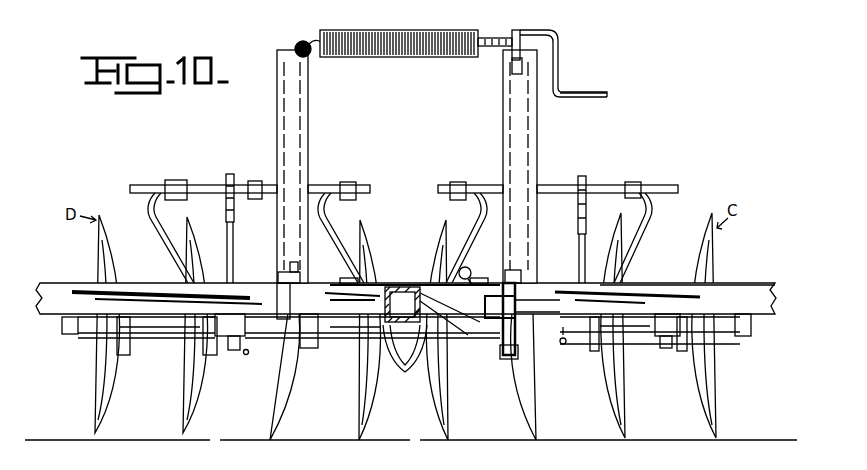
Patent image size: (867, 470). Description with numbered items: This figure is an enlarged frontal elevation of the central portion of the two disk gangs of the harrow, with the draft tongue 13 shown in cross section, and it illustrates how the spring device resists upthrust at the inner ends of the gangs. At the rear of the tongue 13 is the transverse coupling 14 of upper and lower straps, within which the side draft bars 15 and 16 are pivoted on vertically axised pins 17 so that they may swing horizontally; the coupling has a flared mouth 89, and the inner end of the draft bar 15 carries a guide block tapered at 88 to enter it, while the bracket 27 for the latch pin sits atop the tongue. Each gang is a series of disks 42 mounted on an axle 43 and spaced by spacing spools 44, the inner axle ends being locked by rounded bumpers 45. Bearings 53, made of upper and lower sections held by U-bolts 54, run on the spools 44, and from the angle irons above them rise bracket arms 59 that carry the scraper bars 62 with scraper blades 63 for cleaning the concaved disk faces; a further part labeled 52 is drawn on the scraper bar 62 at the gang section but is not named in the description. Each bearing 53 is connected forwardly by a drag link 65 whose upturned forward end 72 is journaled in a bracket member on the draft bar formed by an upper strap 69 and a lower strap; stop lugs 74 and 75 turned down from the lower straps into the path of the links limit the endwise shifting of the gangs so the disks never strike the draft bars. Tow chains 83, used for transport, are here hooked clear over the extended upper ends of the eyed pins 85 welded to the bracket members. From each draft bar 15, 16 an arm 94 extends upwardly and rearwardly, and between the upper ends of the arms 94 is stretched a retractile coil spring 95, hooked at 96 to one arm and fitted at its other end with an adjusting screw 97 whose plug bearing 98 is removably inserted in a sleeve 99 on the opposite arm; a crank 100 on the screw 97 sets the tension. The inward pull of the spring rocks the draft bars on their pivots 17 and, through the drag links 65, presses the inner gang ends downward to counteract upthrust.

The tongue 13 is at (408, 286).
The coupling 14 is at (383, 284).
The side draft bar 15 is at (735, 283).
The side draft bar 16 is at (72, 283).
The pivot pin 17 is at (346, 281).
The bracket 27 is at (470, 336).
The disk 42 is at (150, 405).
The axle 43 is at (64, 333).
The spacing spool 44 is at (140, 339).
The bumper 45 is at (405, 358).
The clamp 52 is at (224, 215).
The bearing 53 is at (258, 352).
The U-bolt 54 is at (247, 356).
The bracket arm 59 is at (588, 205).
The scraper bar 62 is at (205, 185).
The scraper blade 63 is at (160, 228).
The drag link 65 is at (560, 348).
The upper strap 69 is at (279, 279).
The upturned forward end of drag link 72 is at (291, 268).
The inner stop lug 74 is at (316, 348).
The outer stop lug 75 is at (226, 350).
The tow chain 83 is at (496, 358).
The eyed pin 85 is at (522, 307).
The tapered side of guide block 88 is at (430, 284).
The flared mouth 89 is at (472, 275).
The arm 94 is at (277, 126).
The retractile coil spring 95 is at (424, 30).
The hook 96 is at (303, 40).
The adjusting screw 97 is at (494, 37).
The plug bearing 98 is at (526, 33).
The sleeve 99 is at (510, 66).
The crank 100 is at (600, 92).